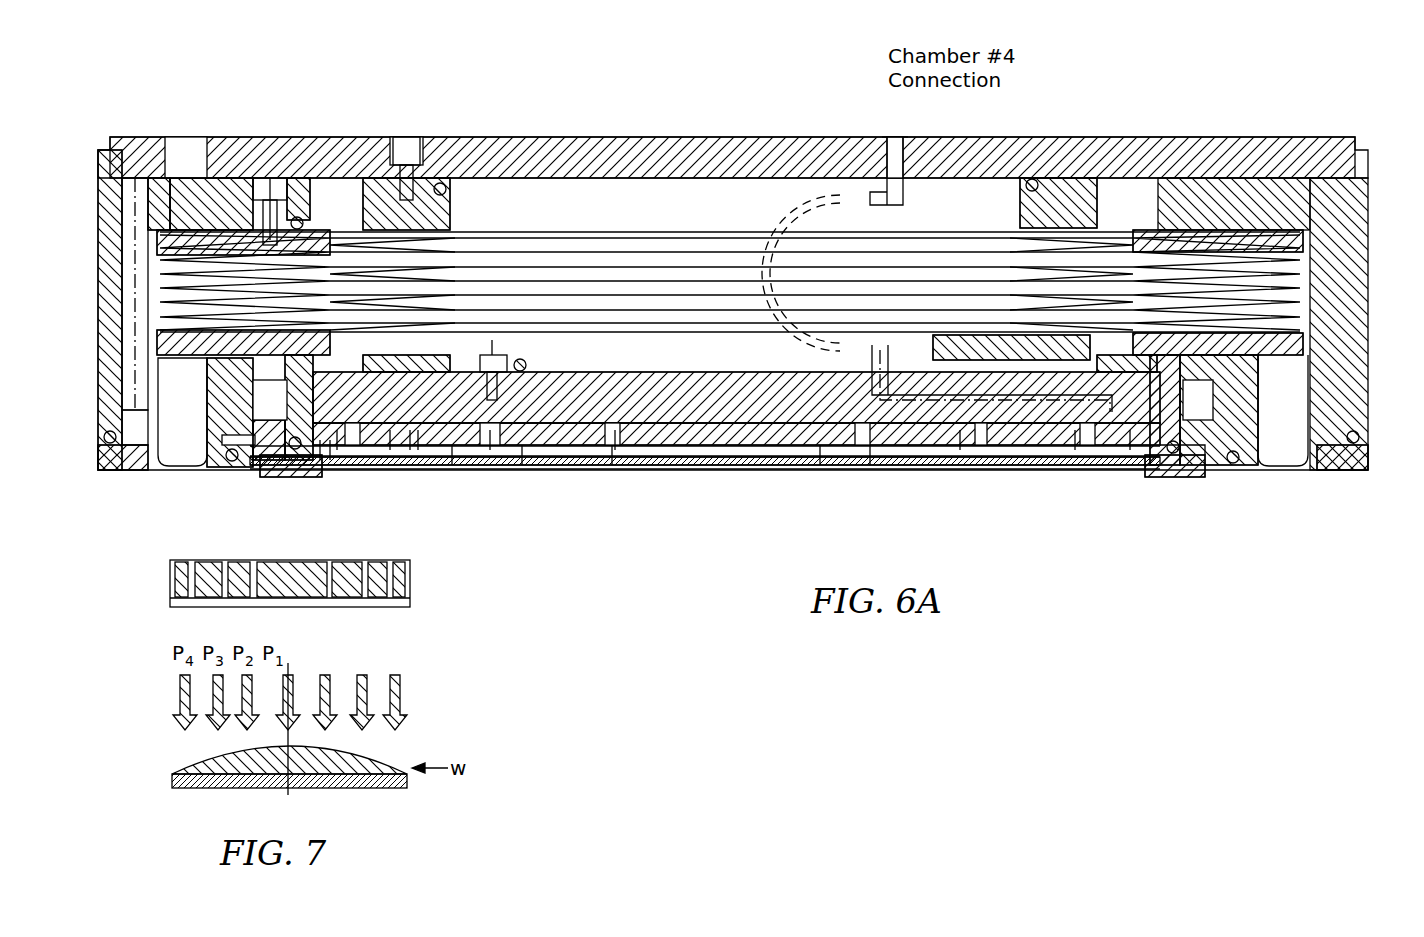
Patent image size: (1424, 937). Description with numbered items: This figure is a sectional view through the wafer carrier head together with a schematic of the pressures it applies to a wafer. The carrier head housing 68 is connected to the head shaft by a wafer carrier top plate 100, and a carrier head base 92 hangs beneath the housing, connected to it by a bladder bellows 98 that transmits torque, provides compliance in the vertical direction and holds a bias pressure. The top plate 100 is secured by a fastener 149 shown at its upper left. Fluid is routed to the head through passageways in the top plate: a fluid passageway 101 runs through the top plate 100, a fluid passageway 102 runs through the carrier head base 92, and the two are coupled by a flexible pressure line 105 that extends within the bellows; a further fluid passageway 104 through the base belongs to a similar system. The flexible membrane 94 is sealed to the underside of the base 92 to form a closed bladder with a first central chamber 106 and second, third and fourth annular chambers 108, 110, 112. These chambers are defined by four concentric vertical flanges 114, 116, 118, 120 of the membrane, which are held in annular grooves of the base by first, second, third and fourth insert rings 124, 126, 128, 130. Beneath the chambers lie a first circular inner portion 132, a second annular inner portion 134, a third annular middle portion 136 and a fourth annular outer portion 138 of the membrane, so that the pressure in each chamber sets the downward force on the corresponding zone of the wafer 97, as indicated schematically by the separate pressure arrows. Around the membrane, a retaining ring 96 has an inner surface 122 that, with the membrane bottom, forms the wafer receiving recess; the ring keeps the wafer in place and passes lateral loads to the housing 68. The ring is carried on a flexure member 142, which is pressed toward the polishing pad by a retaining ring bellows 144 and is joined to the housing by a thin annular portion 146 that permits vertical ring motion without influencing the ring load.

The carrier head housing 68 is at (1350, 262).
The carrier head base 92 is at (745, 405).
The flexible membrane 94 is at (820, 457).
The retaining ring 96 is at (1183, 457).
The wafer 97 is at (709, 482).
The bladder bellows 98 is at (1015, 228).
The wafer carrier top plate 100 is at (1255, 145).
The fluid passageway 101 is at (897, 135).
The fluid passageway 102 is at (1017, 400).
The fluid passageway 104 is at (545, 357).
The flexible pressure line 105 is at (775, 275).
The first central chamber 106 is at (678, 450).
The second annular inner chamber 108 is at (535, 445).
The third annular middle chamber 110 is at (412, 452).
The fourth annular outer chamber 112 is at (339, 447).
The first annular flange 114 is at (873, 452).
The second annular flange 116 is at (962, 450).
The third annular flange 118 is at (1077, 452).
The fourth annular flange 120 is at (1132, 452).
The inner surface of retaining ring 122 is at (325, 465).
The first insert ring 124 is at (615, 457).
The second insert ring 126 is at (497, 440).
The third insert ring 128 is at (418, 452).
The fourth insert ring 130 is at (335, 458).
The first circular inner portion 132 is at (620, 442).
The second annular inner portion 134 is at (525, 452).
The third annular middle portion 136 is at (455, 457).
The fourth annular outer portion 138 is at (394, 452).
The flexure member 142 is at (1250, 462).
The retaining ring bellows 144 is at (1305, 365).
The thin annular portion 146 is at (1292, 470).
The bolt 149 is at (275, 185).